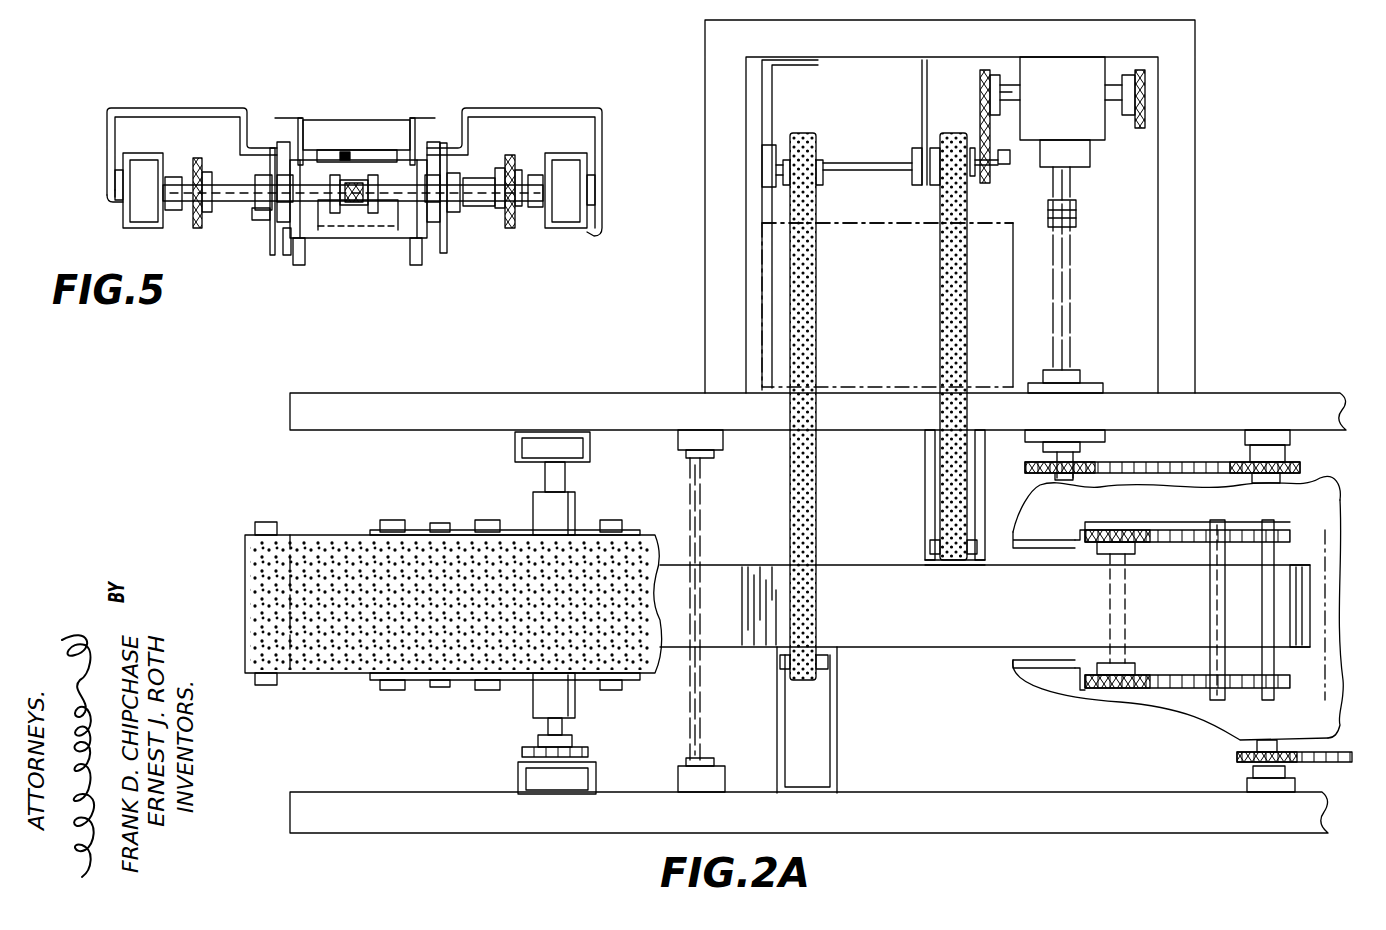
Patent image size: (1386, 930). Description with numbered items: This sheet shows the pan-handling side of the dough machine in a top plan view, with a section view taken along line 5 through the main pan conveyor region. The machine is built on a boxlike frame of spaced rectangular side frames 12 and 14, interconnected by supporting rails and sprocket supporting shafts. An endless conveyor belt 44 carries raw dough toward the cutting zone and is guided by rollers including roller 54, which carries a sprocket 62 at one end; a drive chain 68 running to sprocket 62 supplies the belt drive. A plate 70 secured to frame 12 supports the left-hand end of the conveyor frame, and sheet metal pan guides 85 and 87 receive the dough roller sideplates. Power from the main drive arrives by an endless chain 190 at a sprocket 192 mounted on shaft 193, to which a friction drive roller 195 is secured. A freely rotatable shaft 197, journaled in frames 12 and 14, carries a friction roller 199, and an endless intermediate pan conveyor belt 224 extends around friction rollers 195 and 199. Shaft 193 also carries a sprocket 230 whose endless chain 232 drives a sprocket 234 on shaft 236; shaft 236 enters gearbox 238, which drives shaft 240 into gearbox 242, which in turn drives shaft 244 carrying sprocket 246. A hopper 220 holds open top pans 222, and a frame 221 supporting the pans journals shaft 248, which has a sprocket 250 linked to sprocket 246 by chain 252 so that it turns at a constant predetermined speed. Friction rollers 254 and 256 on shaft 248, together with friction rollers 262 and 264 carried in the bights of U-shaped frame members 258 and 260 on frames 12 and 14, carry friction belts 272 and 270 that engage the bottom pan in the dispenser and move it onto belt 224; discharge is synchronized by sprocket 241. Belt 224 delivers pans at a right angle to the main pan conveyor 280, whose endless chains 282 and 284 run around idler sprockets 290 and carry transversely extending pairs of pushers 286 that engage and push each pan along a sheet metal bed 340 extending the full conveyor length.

In FIG. 5, the side frame 12 is at (118, 214).
In FIG. 2A, the side frame 12 is at (950, 800).
In FIG. 5, the side frame 14 is at (600, 235).
In FIG. 2A, the side frame 14 is at (633, 393).
In FIG. 2A, the endless conveyor belt 44 is at (347, 545).
In FIG. 2A, the roller 54 is at (548, 728).
In FIG. 2A, the sprocket 62 is at (538, 742).
In FIG. 2A, the drive chain 68 is at (592, 752).
In FIG. 2A, the plate 70 is at (413, 533).
In FIG. 5, the sheet metal pan guide 85 is at (270, 238).
In FIG. 5, the guide 87 is at (446, 254).
In FIG. 2A, the endless chain 190 is at (1306, 754).
In FIG. 5, the sprocket 192 is at (230, 208).
In FIG. 2A, the sprocket 192 is at (1240, 758).
In FIG. 5, the shaft 193 is at (232, 222).
In FIG. 2A, the shaft 193 is at (1268, 645).
In FIG. 5, the friction drive roller 195 is at (287, 256).
In FIG. 2A, the friction drive roller 195 is at (1275, 535).
In FIG. 2A, the shaft 197 is at (703, 478).
In FIG. 2A, the friction roller 199 is at (688, 660).
In FIG. 2A, the hopper 220 is at (762, 293).
In FIG. 2A, the frame 221 is at (773, 80).
In FIG. 5, the open top pan 222 is at (383, 122).
In FIG. 5, the intermediate pan conveyor belt 224 is at (424, 245).
In FIG. 2A, the intermediate pan conveyor belt 224 is at (758, 565).
In FIG. 5, the sprocket 230 is at (517, 166).
In FIG. 2A, the sprocket 230 is at (1290, 466).
In FIG. 2A, the endless chain 232 is at (1210, 466).
In FIG. 2A, the sprocket 234 is at (1090, 478).
In FIG. 2A, the shaft 236 is at (1060, 482).
In FIG. 2A, the gearbox 238 is at (1058, 387).
In FIG. 2A, the shaft 240 is at (1070, 185).
In FIG. 2A, the sprocket 241 is at (1140, 72).
In FIG. 2A, the gearbox 242 is at (1062, 112).
In FIG. 2A, the shaft 244 is at (1010, 85).
In FIG. 2A, the sprocket 246 is at (982, 76).
In FIG. 2A, the shaft 248 is at (906, 166).
In FIG. 2A, the sprocket 250 is at (992, 168).
In FIG. 2A, the chain 252 is at (925, 70).
In FIG. 2A, the friction roller 254 is at (808, 140).
In FIG. 2A, the friction roller 256 is at (975, 185).
In FIG. 2A, the U-shaped frame member 258 is at (837, 742).
In FIG. 2A, the U-shaped frame member 260 is at (928, 478).
In FIG. 2A, the friction roller 262 is at (830, 666).
In FIG. 2A, the friction roller 264 is at (930, 548).
In FIG. 2A, the friction belt 270 is at (960, 242).
In FIG. 2A, the friction belt 272 is at (803, 336).
In FIG. 5, the main pan conveyor 280 is at (472, 253).
In FIG. 2A, the main pan conveyor 280 is at (1146, 698).
In FIG. 2A, the endless chain 282 is at (1330, 507).
In FIG. 2A, the endless chain 284 is at (1265, 682).
In FIG. 5, the pushers 286 is at (400, 238).
In FIG. 2A, the pushers 286 is at (1208, 548).
In FIG. 5, the idler sprocket 290 is at (455, 225).
In FIG. 2A, the idler sprocket 290 is at (1096, 548).
In FIG. 5, the sheet metal bed 340 is at (332, 160).
In FIG. 2A, the section line 5 is at (1228, 375).